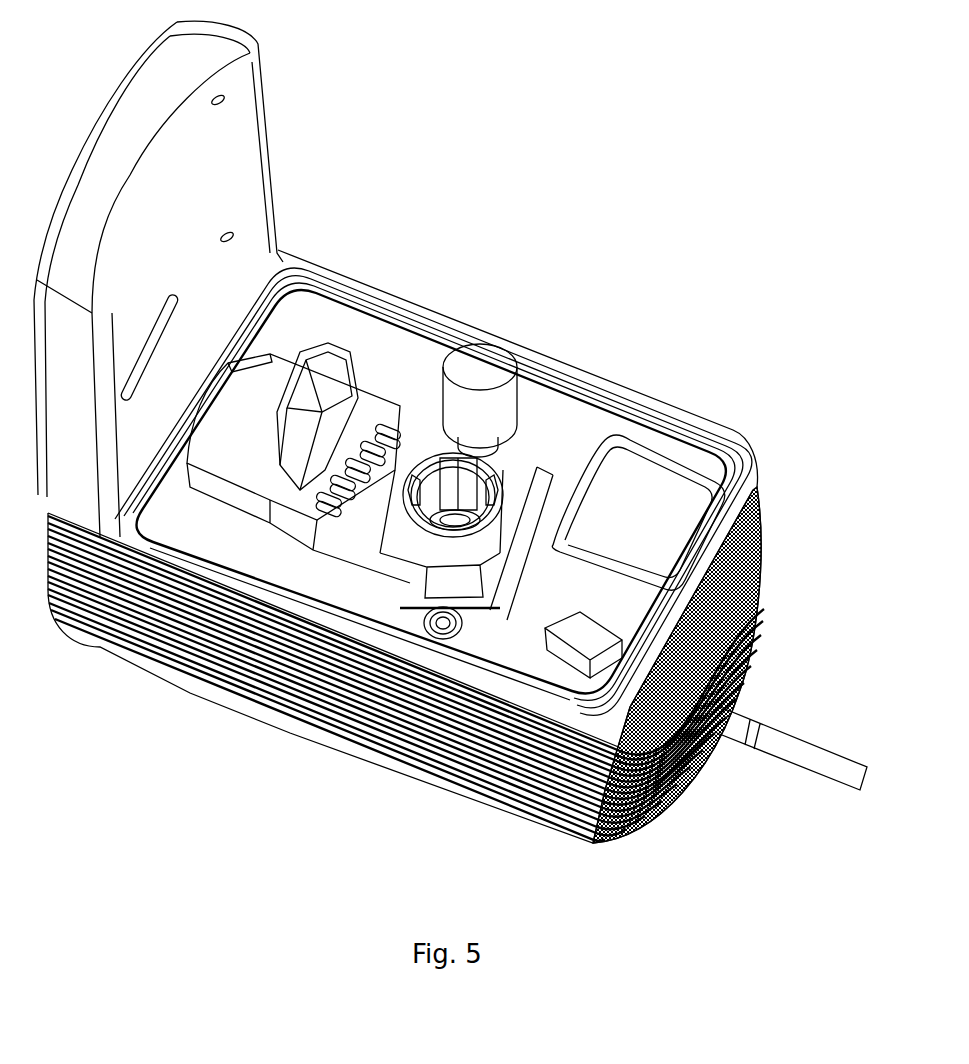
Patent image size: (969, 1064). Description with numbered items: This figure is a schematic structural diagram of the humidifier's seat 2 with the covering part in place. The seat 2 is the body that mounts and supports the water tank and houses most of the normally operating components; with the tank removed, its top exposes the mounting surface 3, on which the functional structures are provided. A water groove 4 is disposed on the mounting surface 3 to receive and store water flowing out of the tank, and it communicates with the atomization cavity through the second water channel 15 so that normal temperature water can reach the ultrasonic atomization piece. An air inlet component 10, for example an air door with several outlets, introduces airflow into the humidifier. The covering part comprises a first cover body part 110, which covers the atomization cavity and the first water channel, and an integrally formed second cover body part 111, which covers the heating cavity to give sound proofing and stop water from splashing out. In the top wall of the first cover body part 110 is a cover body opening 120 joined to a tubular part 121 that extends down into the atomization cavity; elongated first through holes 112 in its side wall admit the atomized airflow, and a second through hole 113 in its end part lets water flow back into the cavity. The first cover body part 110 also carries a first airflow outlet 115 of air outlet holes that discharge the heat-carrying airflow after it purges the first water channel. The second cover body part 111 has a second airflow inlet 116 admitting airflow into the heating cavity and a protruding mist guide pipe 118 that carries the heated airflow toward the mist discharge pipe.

The seat 2 is at (731, 406).
The mounting surface 3 is at (422, 378).
The water groove 4 is at (690, 765).
The air inlet component 10 is at (522, 432).
The second water channel 15 is at (531, 580).
The first cover body part 110 is at (381, 528).
The second cover body part 111 is at (238, 455).
The first through hole 112 is at (462, 495).
The second through hole 113 is at (447, 632).
The first airflow outlet 115 is at (388, 428).
The second airflow inlet 116 is at (268, 352).
The mist guide pipe 118 is at (333, 350).
The cover body opening 120 is at (500, 473).
The tubular part 121 is at (429, 498).